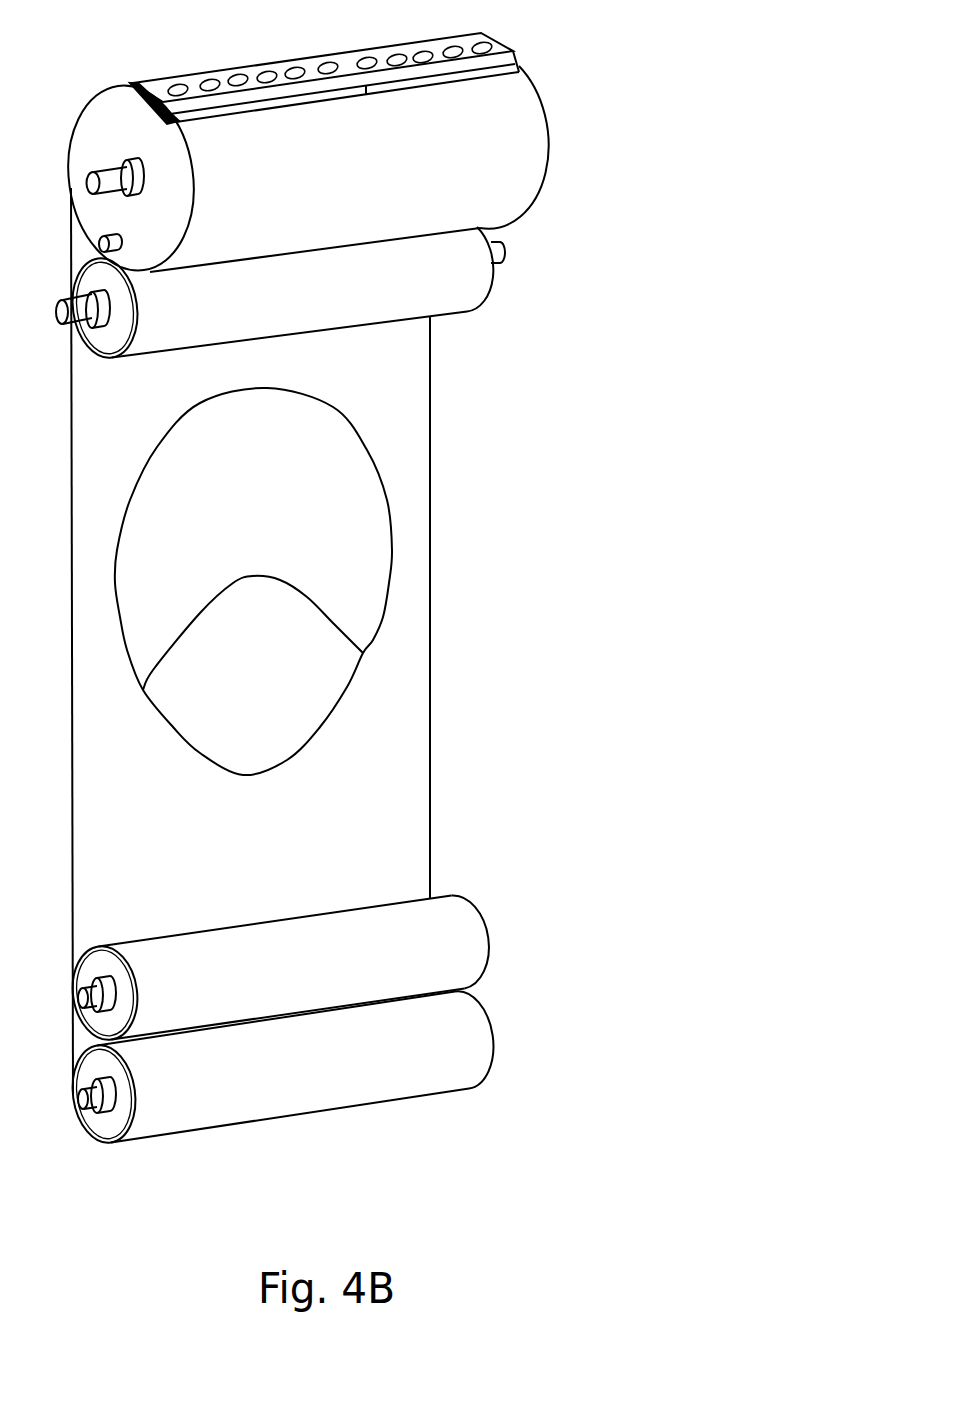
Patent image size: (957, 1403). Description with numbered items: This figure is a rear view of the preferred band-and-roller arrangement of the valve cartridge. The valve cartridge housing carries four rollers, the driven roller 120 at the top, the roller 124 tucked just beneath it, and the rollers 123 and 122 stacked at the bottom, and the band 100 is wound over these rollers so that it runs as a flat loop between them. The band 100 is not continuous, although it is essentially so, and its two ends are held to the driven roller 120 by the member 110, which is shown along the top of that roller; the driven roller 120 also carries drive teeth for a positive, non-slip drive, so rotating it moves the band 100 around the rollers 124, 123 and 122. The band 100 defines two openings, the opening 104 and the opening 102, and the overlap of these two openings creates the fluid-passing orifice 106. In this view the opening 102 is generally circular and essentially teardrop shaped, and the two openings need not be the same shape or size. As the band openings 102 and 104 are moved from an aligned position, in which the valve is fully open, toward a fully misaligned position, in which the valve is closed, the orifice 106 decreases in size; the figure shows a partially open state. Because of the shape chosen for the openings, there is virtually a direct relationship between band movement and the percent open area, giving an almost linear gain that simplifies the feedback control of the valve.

The band 100 is at (408, 412).
The opening 102 is at (262, 598).
The opening 104 is at (287, 410).
The fluid-passing orifice 106 is at (284, 701).
The member 110 is at (222, 90).
The driven roller 120 is at (513, 160).
The roller 122 is at (468, 1060).
The roller 123 is at (465, 925).
The roller 124 is at (462, 285).